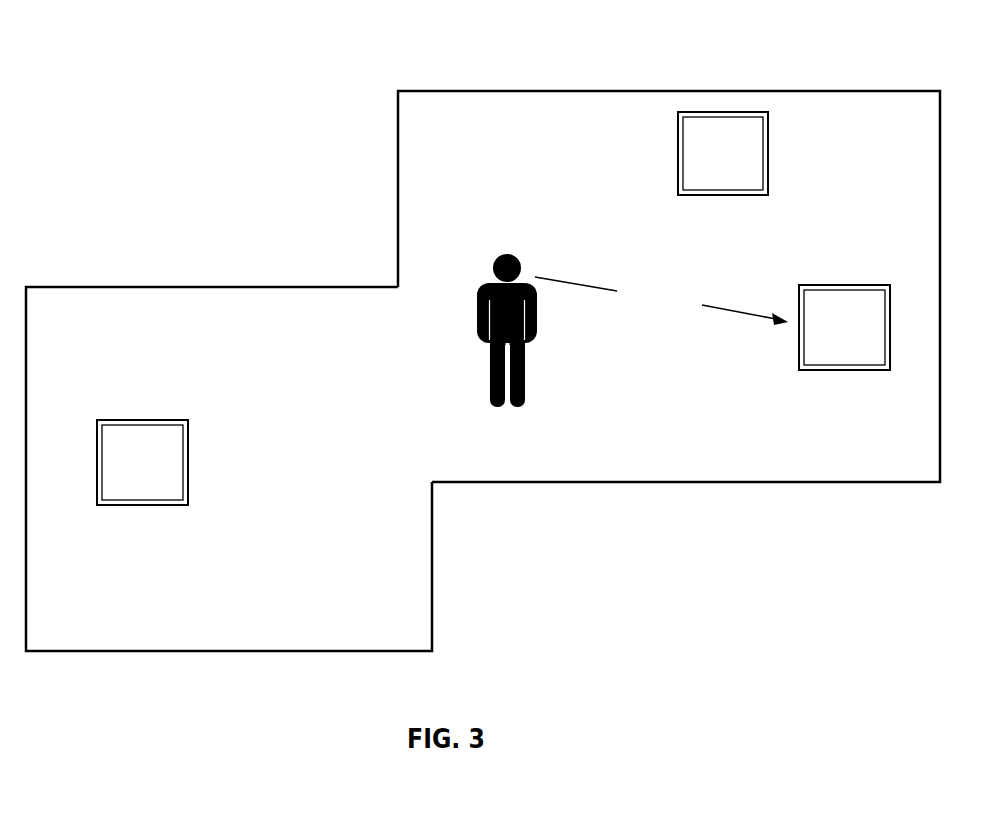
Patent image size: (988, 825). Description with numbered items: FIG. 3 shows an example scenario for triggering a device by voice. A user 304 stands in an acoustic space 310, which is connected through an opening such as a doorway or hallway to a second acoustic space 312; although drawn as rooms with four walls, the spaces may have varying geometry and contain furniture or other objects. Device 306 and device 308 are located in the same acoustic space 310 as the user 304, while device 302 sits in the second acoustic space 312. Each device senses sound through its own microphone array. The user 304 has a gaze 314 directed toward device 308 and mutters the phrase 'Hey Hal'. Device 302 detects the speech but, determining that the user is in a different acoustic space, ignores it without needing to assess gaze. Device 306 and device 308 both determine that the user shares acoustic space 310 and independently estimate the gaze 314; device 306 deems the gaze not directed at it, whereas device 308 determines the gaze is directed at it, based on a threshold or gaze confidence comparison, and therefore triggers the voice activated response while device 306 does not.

The device 302 is at (160, 491).
The user 304 is at (524, 446).
The device 306 is at (740, 181).
The device 308 is at (862, 354).
The acoustic space 310 is at (568, 117).
The second acoustic space 312 is at (243, 298).
The gaze 314 is at (703, 315).